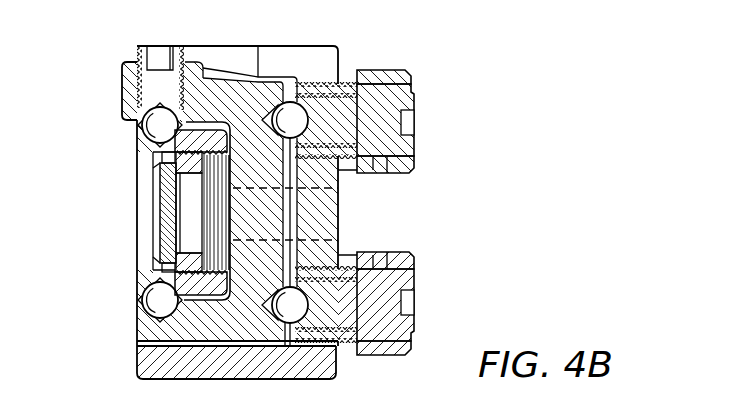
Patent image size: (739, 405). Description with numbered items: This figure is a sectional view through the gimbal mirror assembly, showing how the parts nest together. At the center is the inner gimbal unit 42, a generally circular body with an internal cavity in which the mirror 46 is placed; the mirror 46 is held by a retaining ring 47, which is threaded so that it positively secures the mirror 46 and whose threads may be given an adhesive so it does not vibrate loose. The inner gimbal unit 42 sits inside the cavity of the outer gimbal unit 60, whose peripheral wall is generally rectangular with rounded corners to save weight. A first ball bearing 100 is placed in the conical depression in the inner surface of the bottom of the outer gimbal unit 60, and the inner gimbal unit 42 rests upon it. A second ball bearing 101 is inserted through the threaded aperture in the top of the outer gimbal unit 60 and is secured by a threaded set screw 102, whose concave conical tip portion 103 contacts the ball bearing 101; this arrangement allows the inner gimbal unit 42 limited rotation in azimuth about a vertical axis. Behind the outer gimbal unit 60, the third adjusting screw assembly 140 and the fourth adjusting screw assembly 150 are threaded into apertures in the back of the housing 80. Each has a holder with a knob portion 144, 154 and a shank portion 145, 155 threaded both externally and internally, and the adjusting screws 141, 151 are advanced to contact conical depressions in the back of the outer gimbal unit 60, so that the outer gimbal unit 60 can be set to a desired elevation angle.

The inner gimbal unit 42 is at (185, 285).
The mirror 46 is at (160, 218).
The retaining ring 47 is at (171, 192).
The outer gimbal unit 60 is at (147, 332).
The housing 80 is at (312, 47).
The first ball bearing 100 is at (155, 300).
The second ball bearing 101 is at (158, 124).
The threaded set screw 102 is at (168, 46).
The concave conical tip portion 103 is at (137, 94).
The third adjusting screw assembly 140 is at (452, 112).
The adjusting screw 141 is at (393, 133).
The knob portion 144 is at (390, 69).
The shank portion 145 is at (347, 166).
The fourth adjusting screw assembly 150 is at (452, 305).
The adjusting screw 151 is at (415, 292).
The knob portion 154 is at (388, 256).
The shank portion 155 is at (345, 350).